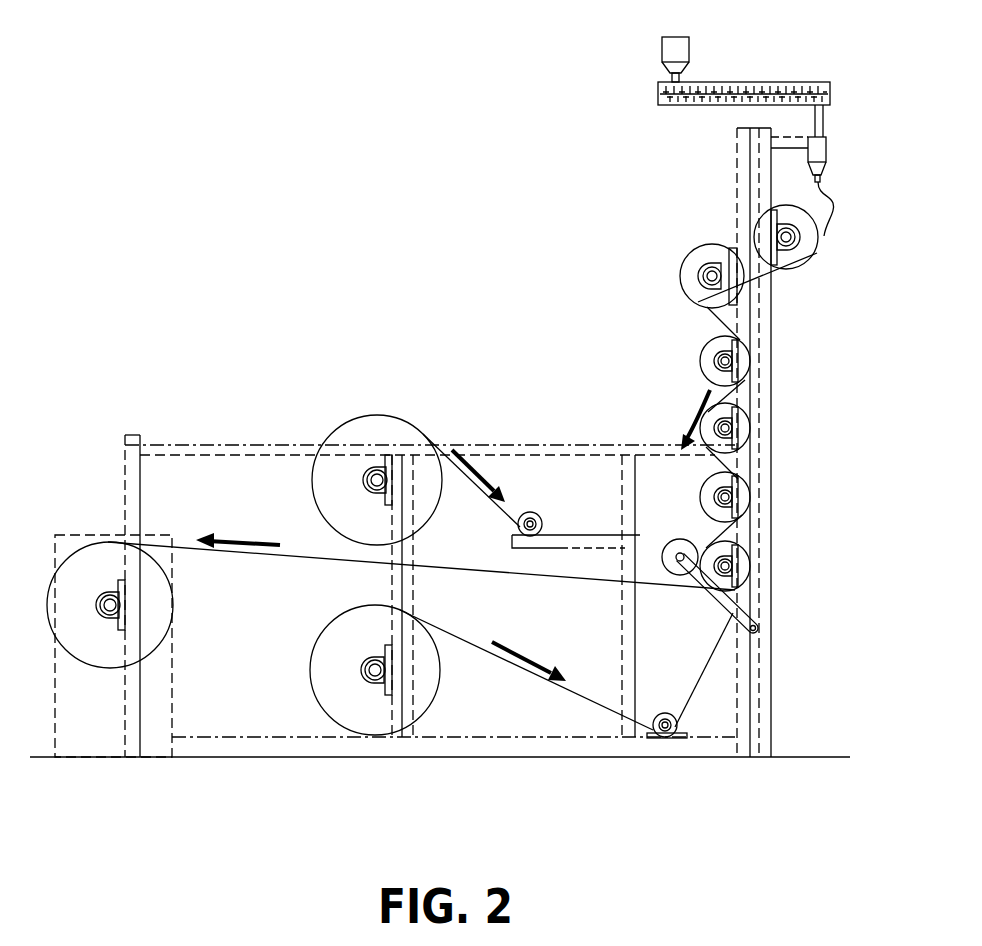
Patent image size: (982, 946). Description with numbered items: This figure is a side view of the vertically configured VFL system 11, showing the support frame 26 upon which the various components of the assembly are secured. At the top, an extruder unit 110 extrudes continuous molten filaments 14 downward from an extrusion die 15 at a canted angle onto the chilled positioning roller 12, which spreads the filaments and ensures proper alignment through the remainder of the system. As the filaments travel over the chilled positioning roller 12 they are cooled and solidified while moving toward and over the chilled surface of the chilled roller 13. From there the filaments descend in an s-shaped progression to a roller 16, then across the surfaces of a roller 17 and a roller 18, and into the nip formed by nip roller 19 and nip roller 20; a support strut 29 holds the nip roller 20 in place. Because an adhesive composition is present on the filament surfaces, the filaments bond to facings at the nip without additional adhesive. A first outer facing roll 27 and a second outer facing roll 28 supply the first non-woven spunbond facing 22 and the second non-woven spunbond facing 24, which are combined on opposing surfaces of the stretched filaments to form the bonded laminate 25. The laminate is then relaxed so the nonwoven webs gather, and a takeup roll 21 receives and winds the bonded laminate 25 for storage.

The VFL system 11 is at (512, 308).
The extrusion die / coating head 110 is at (735, 82).
The extrusion die 15 is at (826, 150).
The continuous molten filaments 14 is at (825, 232).
The chilled positioning roller 12 is at (790, 262).
The chilled roller 13 is at (695, 262).
The roller 16 is at (706, 354).
The roller 17 is at (742, 418).
The roller 18 is at (744, 488).
The nip roller 19 is at (660, 545).
The nip roller 20 is at (742, 557).
The support strut 29 is at (760, 612).
The support frame 26 is at (205, 440).
The first outer facing roll 27 is at (345, 426).
The second outer facing roll 28 is at (332, 688).
The bonded laminate 25 is at (193, 545).
The takeup roll 21 is at (112, 650).
The first non-woven spunbond facing 22 is at (497, 516).
The second non-woven spunbond facing 24 is at (558, 687).